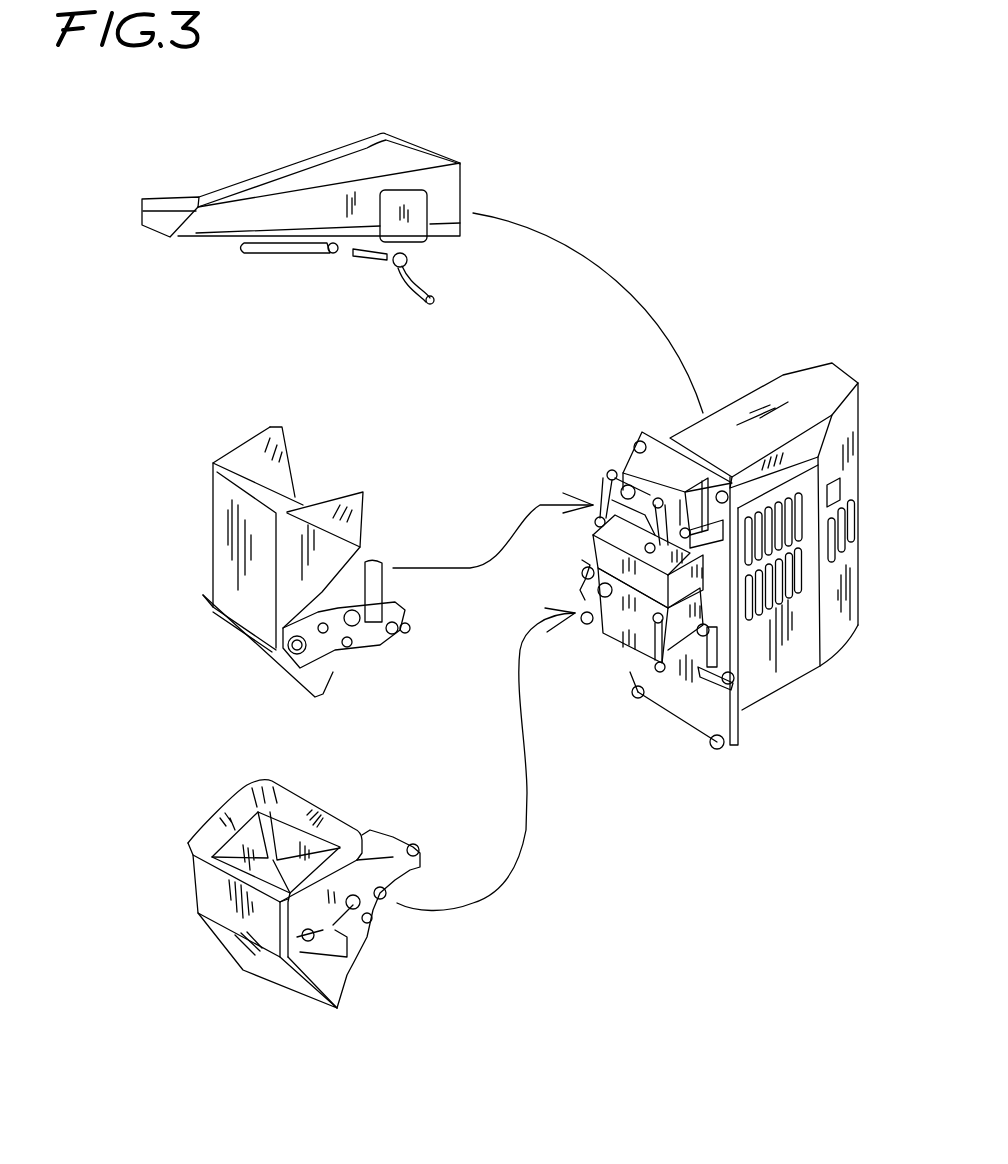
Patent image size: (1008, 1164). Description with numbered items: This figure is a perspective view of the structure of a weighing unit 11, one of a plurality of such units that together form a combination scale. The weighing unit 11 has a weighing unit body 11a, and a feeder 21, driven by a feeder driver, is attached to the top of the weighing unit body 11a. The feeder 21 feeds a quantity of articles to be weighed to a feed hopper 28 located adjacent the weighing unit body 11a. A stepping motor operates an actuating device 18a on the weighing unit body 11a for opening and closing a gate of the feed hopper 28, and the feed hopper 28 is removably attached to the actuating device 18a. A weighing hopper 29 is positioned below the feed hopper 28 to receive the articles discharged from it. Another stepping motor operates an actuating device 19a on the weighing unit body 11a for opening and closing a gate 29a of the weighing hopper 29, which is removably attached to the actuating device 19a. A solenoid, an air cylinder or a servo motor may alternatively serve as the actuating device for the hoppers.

The weighing unit 11 is at (710, 118).
The weighing unit body 11a is at (805, 370).
The actuating device 18a is at (597, 567).
The actuating device 19a is at (617, 637).
The feeder 21 is at (307, 177).
The feed hopper 28 is at (233, 563).
The weighing hopper 29 is at (217, 885).
The gate 29a is at (270, 963).